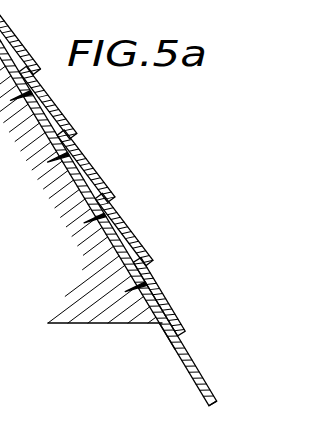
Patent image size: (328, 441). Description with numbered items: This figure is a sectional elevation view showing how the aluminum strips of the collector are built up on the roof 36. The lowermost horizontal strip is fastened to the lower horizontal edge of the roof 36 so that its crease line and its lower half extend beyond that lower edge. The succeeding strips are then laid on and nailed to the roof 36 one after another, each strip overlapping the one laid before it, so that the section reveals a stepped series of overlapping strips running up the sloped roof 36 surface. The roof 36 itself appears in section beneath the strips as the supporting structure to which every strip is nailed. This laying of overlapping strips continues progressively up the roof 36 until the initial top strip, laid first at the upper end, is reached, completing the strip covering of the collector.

The roof 36 is at (136, 312).